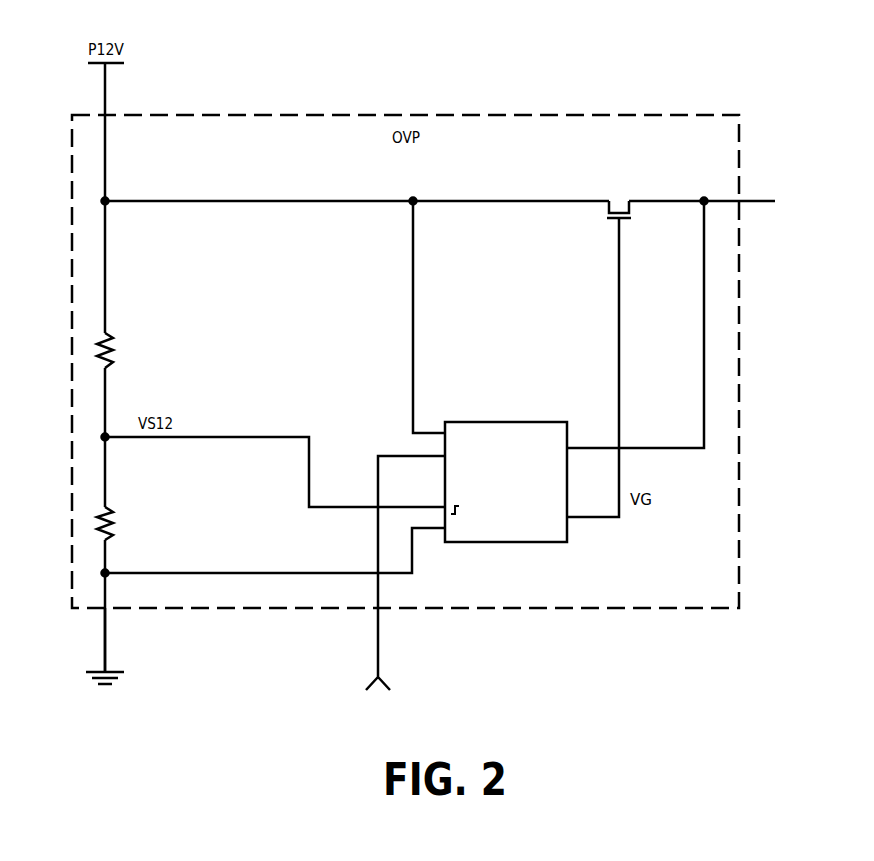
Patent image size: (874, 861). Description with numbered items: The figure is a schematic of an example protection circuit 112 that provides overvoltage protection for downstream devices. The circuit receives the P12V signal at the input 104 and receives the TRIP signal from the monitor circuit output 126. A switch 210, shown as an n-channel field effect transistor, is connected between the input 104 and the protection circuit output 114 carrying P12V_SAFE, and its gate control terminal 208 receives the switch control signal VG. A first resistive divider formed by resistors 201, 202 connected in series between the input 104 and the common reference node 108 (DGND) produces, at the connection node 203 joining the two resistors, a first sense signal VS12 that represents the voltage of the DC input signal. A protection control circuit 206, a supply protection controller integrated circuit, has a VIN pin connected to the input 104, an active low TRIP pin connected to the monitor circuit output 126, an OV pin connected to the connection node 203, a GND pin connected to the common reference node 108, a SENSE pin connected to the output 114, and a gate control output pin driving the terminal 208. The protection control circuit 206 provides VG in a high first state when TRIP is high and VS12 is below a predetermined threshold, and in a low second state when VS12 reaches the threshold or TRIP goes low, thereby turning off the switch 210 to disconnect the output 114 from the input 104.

The input 104 is at (105, 97).
The common reference node 108 is at (105, 642).
The protection circuit 112 is at (405, 115).
The protection circuit output 114 is at (757, 201).
The monitor circuit output 126 is at (378, 645).
The resistor 201 is at (113, 348).
The resistor 202 is at (113, 520).
The connection node 203 is at (262, 437).
The protection control circuit 206 is at (513, 422).
The gate control terminal 208 is at (619, 270).
The switch 210 is at (609, 197).